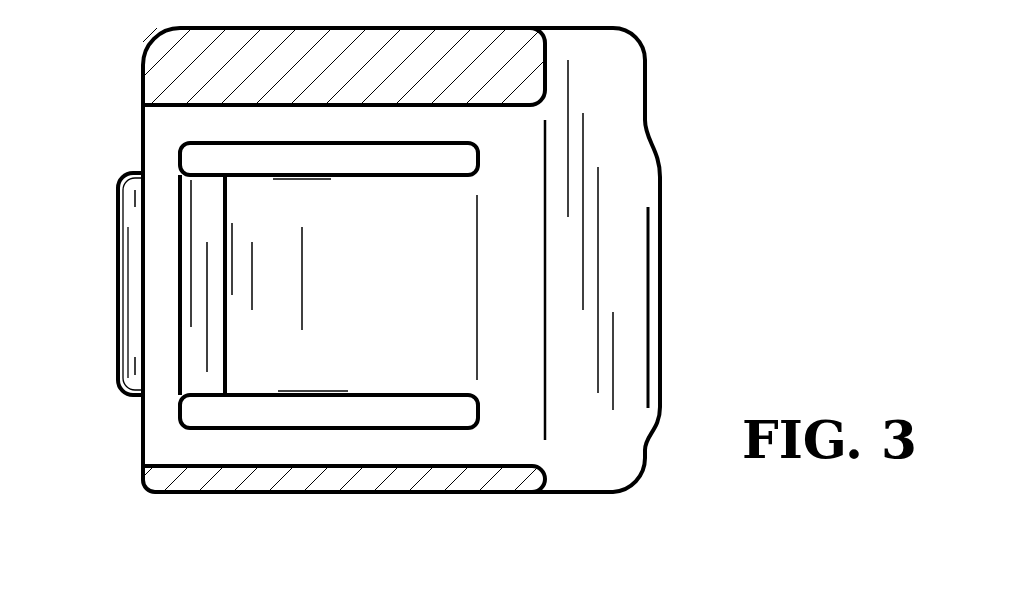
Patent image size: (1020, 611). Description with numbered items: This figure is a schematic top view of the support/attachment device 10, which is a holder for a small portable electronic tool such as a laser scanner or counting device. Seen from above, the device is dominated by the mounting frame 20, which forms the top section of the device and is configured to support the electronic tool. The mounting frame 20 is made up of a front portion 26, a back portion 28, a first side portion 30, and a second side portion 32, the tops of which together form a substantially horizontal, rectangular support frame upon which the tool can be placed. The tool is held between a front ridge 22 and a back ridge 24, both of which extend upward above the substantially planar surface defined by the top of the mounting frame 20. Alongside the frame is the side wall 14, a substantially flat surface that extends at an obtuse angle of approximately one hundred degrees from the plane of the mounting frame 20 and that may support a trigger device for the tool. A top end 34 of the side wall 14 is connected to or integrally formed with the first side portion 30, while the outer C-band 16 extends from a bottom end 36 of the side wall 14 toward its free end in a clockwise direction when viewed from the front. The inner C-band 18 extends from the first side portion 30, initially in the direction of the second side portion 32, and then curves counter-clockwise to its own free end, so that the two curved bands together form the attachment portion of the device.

The support/attachment device 10 is at (762, 232).
The side wall 14 is at (623, 195).
The outer C-band 16 is at (130, 303).
The inner C-band 18 is at (378, 260).
The mounting frame 20 is at (139, 437).
The front ridge 22 is at (412, 477).
The back ridge 24 is at (168, 72).
The front portion 26 is at (273, 445).
The back portion 28 is at (315, 125).
The first side portion 30 is at (513, 248).
The second side portion 32 is at (161, 187).
The top end 34 is at (553, 258).
The bottom end 36 is at (612, 297).